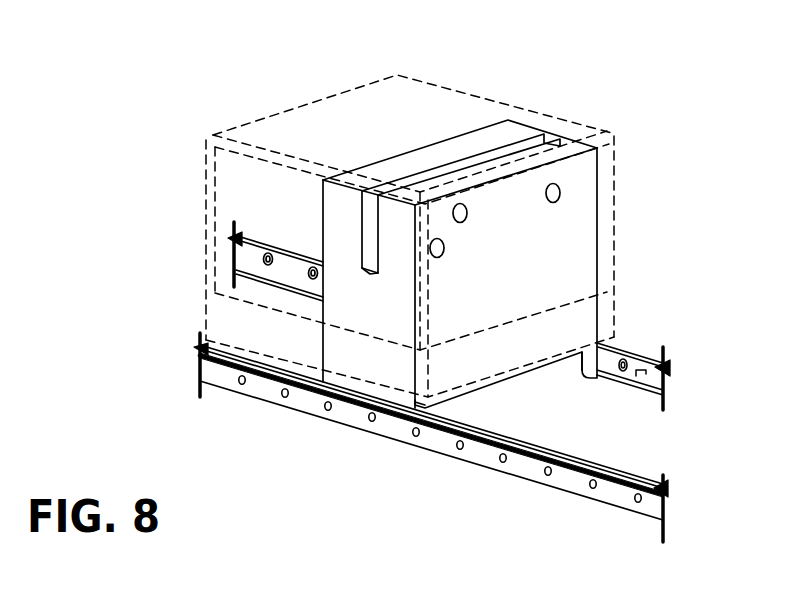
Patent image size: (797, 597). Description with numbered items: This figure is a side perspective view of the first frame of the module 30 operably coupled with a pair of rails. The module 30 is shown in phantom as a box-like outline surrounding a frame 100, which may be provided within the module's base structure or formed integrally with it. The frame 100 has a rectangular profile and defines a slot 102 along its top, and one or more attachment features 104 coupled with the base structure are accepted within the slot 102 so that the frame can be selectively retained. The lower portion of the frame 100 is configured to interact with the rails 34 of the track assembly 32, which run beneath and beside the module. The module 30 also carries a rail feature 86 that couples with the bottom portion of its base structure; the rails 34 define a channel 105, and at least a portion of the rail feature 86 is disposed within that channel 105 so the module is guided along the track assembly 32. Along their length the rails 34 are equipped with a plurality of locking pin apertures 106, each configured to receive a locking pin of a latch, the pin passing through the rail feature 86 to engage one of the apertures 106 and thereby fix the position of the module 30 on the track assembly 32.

The module 30 is at (447, 115).
The track assembly 32 is at (644, 352).
The rails 34 is at (664, 376).
The rail feature 86 is at (597, 364).
The frame 100 is at (364, 270).
The slot 102 is at (542, 140).
The attachment feature 104 is at (647, 371).
The channel 105 is at (382, 412).
The locking pin apertures 106 is at (460, 447).